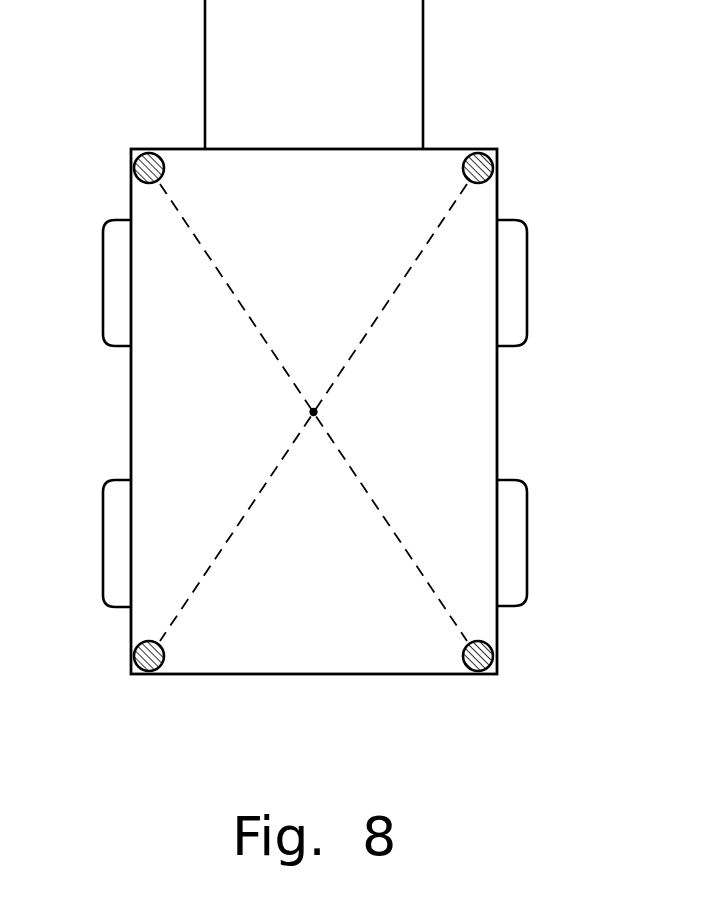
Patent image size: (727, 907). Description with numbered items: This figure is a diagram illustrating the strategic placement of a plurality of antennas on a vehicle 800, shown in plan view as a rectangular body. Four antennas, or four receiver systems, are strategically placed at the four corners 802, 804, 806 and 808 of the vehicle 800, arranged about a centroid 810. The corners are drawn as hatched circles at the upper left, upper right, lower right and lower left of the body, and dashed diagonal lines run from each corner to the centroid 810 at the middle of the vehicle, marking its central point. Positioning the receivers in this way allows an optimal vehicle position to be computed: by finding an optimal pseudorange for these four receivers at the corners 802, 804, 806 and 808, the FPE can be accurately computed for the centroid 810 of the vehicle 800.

The vehicle 800 is at (477, 80).
The corner of the vehicle 802 is at (133, 172).
The corner of the vehicle 804 is at (495, 167).
The corner of the vehicle 806 is at (495, 654).
The corner of the vehicle 808 is at (133, 658).
The centroid 810 is at (316, 411).